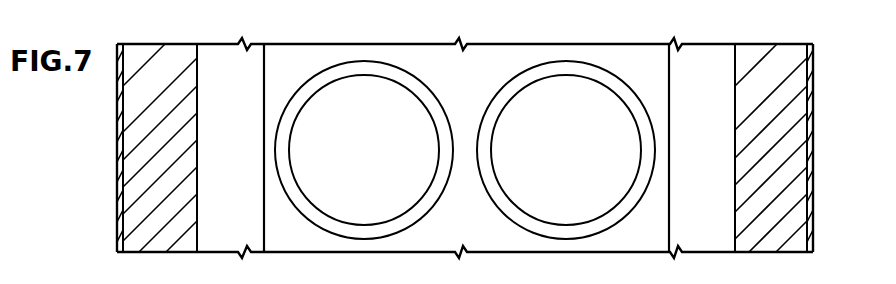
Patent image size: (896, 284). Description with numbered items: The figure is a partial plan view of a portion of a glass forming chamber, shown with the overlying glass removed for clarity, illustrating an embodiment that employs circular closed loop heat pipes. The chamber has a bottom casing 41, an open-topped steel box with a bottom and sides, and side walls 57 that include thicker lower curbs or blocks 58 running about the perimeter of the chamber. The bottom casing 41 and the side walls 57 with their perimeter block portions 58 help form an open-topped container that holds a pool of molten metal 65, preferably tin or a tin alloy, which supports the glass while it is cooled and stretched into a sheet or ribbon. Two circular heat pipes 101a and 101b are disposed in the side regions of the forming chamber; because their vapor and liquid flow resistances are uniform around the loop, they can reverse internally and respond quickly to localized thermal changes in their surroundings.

The bottom casing 41 is at (813, 160).
The side walls 57 is at (172, 44).
The lower curbs or blocks 58 is at (735, 44).
The pool of molten metal 65 is at (476, 85).
The circular heat pipe 101a is at (347, 233).
The circular heat pipe 101b is at (593, 230).